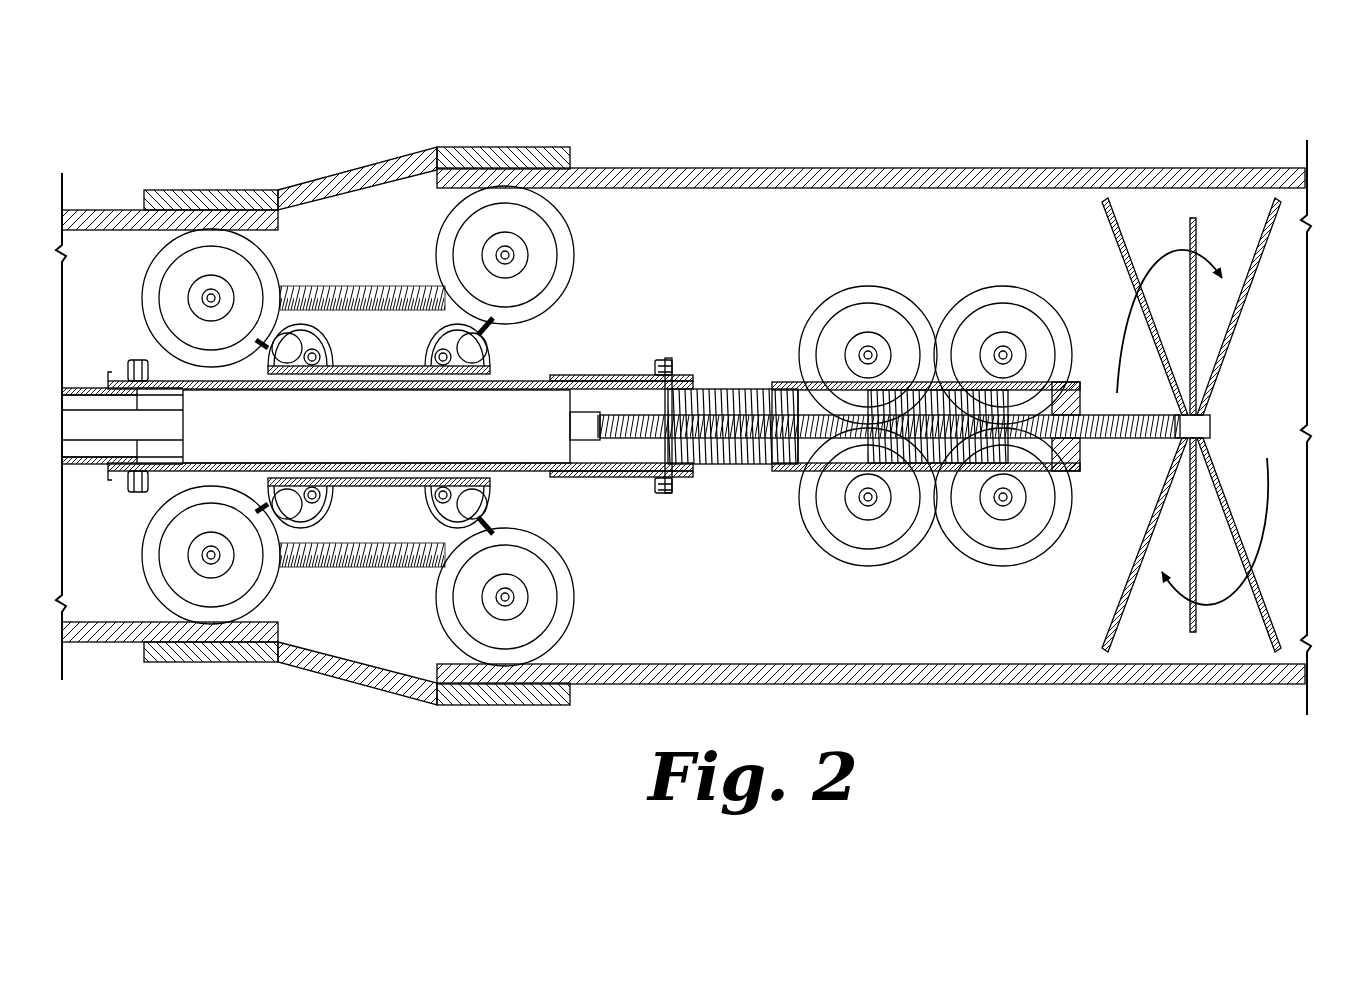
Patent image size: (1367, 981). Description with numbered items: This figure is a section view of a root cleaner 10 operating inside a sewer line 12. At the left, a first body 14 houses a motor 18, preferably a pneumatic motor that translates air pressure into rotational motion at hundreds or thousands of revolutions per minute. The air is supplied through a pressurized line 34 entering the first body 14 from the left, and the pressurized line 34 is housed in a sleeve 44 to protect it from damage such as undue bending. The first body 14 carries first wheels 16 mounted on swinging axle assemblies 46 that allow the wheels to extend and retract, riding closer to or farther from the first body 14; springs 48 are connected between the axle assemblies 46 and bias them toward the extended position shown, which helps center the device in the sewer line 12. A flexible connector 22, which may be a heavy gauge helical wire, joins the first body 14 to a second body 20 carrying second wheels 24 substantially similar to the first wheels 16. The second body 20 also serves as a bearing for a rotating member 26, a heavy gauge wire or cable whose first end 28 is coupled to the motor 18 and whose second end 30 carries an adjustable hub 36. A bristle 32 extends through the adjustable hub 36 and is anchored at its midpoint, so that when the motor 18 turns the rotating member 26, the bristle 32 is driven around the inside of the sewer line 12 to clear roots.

The root cleaner 10 is at (228, 92).
The sewer line 12 is at (1125, 168).
The first body 14 is at (540, 378).
The first wheel 16 is at (437, 243).
The motor 18 is at (388, 436).
The second body 20 is at (790, 380).
The flexible connector 22 is at (740, 385).
The second wheel 24 is at (990, 290).
The rotating member 26 is at (640, 440).
The first end 28 is at (600, 442).
The second end 30 is at (1222, 384).
The bristle 32 is at (1262, 235).
The pressurized line 34 is at (90, 430).
The adjustable hub 36 is at (1212, 430).
The sleeve 44 is at (100, 470).
The swinging axle assembly 46 is at (425, 328).
The spring 48 is at (355, 290).